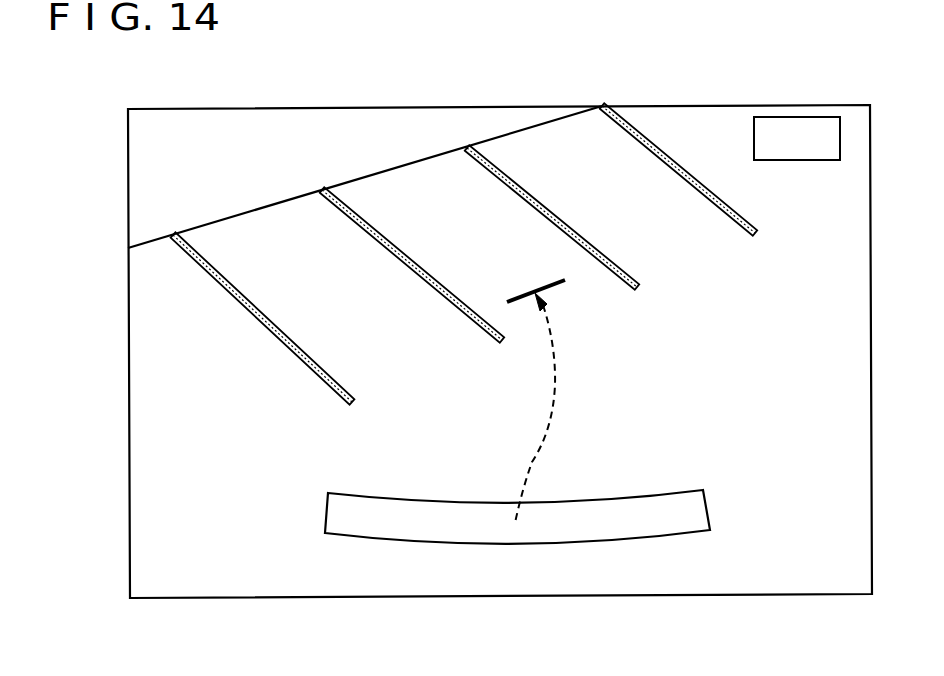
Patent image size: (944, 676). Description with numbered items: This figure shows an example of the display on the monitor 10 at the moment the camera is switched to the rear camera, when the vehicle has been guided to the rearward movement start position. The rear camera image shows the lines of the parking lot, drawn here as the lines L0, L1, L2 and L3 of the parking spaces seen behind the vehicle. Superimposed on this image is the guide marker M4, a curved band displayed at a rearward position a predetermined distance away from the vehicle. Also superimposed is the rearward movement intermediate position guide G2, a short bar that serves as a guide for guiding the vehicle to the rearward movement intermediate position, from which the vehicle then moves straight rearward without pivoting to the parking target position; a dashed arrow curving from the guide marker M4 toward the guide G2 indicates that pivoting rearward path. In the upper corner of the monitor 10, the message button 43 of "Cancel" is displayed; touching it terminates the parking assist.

The monitor 10 is at (127, 210).
The lane line L0 is at (258, 312).
The line of a parking lot L1 is at (368, 222).
The lane line L2 is at (548, 210).
The lane line L3 is at (697, 188).
The rearward movement intermediate position guide G2 is at (548, 286).
The guide marker M4 is at (625, 493).
The message button of Cancel 43 is at (800, 160).